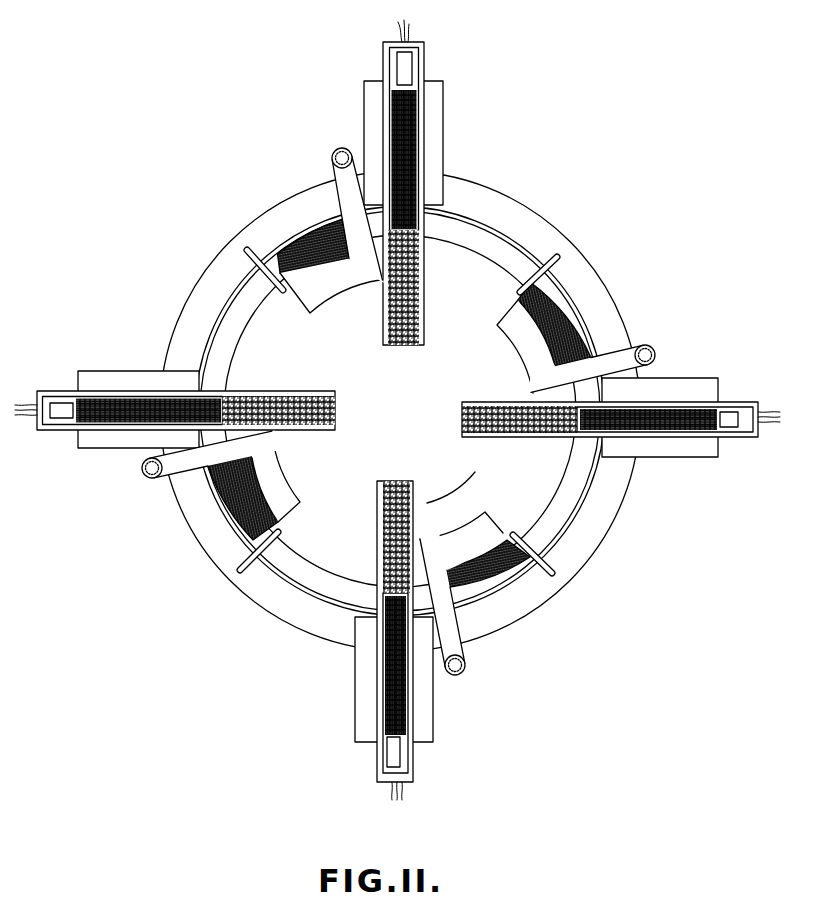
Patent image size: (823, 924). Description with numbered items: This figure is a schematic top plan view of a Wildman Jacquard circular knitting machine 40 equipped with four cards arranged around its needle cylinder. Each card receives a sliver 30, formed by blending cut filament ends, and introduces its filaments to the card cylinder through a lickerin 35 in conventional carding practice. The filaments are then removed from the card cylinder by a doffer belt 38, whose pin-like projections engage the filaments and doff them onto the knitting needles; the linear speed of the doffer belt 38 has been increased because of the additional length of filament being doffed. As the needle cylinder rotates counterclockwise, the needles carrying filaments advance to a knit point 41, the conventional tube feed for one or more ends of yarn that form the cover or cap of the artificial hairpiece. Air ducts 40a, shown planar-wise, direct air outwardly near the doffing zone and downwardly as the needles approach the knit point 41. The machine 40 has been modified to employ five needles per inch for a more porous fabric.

The sliver 30 is at (28, 400).
The lickerin 35 is at (412, 70).
The doffer belt 38 is at (336, 409).
The Wildman Jacquard circular knitting machine 40 is at (218, 278).
The air ducts 40a is at (318, 295).
The knit point 41 is at (277, 285).